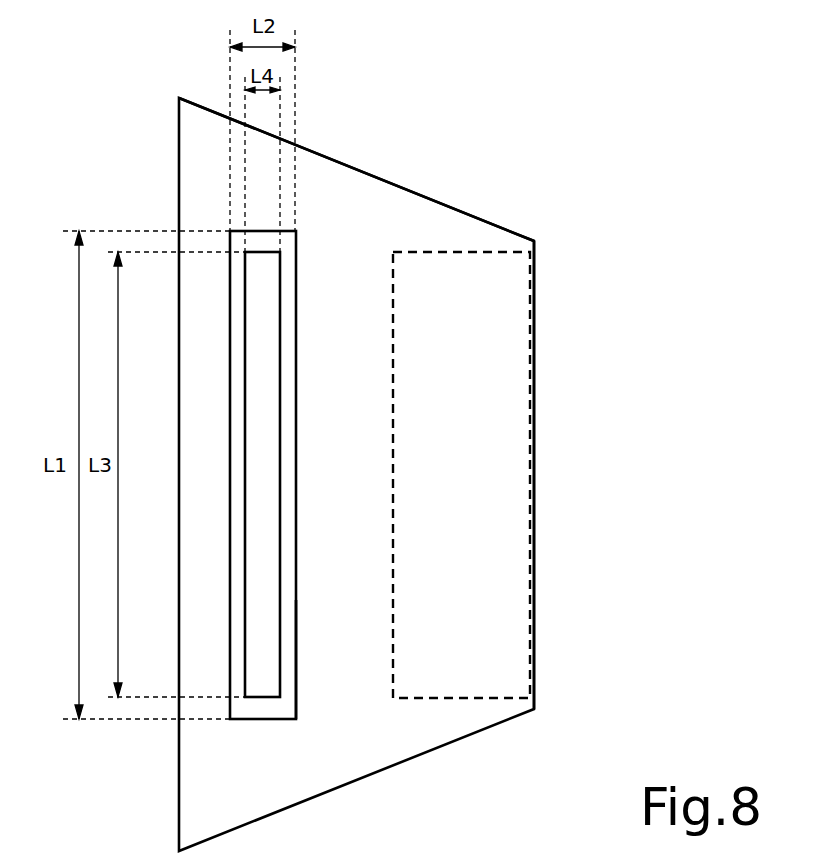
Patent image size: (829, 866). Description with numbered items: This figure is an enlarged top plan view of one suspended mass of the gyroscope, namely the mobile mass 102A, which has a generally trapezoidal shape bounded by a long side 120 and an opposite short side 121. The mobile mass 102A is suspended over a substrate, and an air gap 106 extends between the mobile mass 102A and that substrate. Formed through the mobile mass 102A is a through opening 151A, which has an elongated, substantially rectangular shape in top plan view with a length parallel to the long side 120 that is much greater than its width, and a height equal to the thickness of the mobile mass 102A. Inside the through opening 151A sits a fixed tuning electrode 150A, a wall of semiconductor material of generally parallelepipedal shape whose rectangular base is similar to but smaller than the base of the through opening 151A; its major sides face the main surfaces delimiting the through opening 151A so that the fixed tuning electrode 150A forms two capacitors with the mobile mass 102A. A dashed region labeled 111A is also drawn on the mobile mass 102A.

The long side 120 is at (177, 185).
The mobile mass 102A is at (380, 178).
The short side 121 is at (534, 333).
The through opening 151A is at (297, 263).
The fixed tuning electrode 150A is at (270, 457).
The air gap 106 is at (291, 676).
The internal component region (dashed) 111A is at (488, 462).